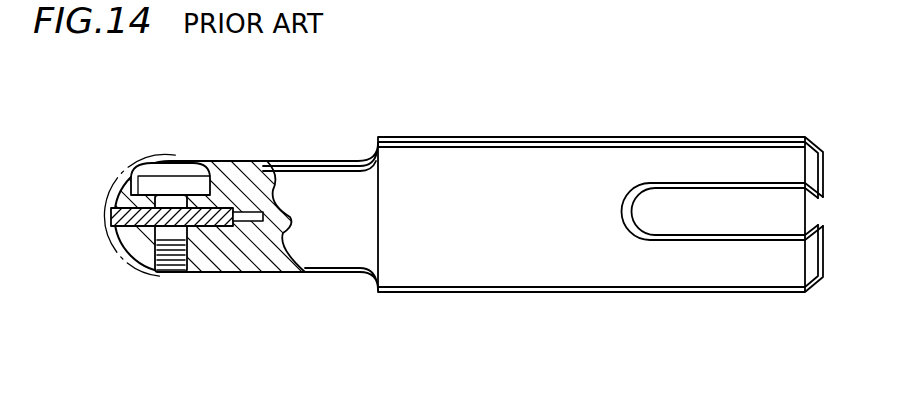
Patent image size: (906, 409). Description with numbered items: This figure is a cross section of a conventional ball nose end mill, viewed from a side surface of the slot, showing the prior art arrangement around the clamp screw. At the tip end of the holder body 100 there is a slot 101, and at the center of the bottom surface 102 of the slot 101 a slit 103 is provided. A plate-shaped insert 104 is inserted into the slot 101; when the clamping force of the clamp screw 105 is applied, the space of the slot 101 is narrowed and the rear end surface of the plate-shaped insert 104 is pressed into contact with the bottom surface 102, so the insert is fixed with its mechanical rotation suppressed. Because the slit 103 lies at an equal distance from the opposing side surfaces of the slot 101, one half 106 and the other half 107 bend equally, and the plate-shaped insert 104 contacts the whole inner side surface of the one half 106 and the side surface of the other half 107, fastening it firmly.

The holder body 100 is at (342, 243).
The slot 101 is at (110, 222).
The bottom surface 102 is at (220, 240).
The slit 103 is at (250, 214).
The plate-shaped insert 104 is at (112, 215).
The clamp screw 105 is at (180, 170).
The one half 106 is at (122, 170).
The other half 107 is at (140, 243).